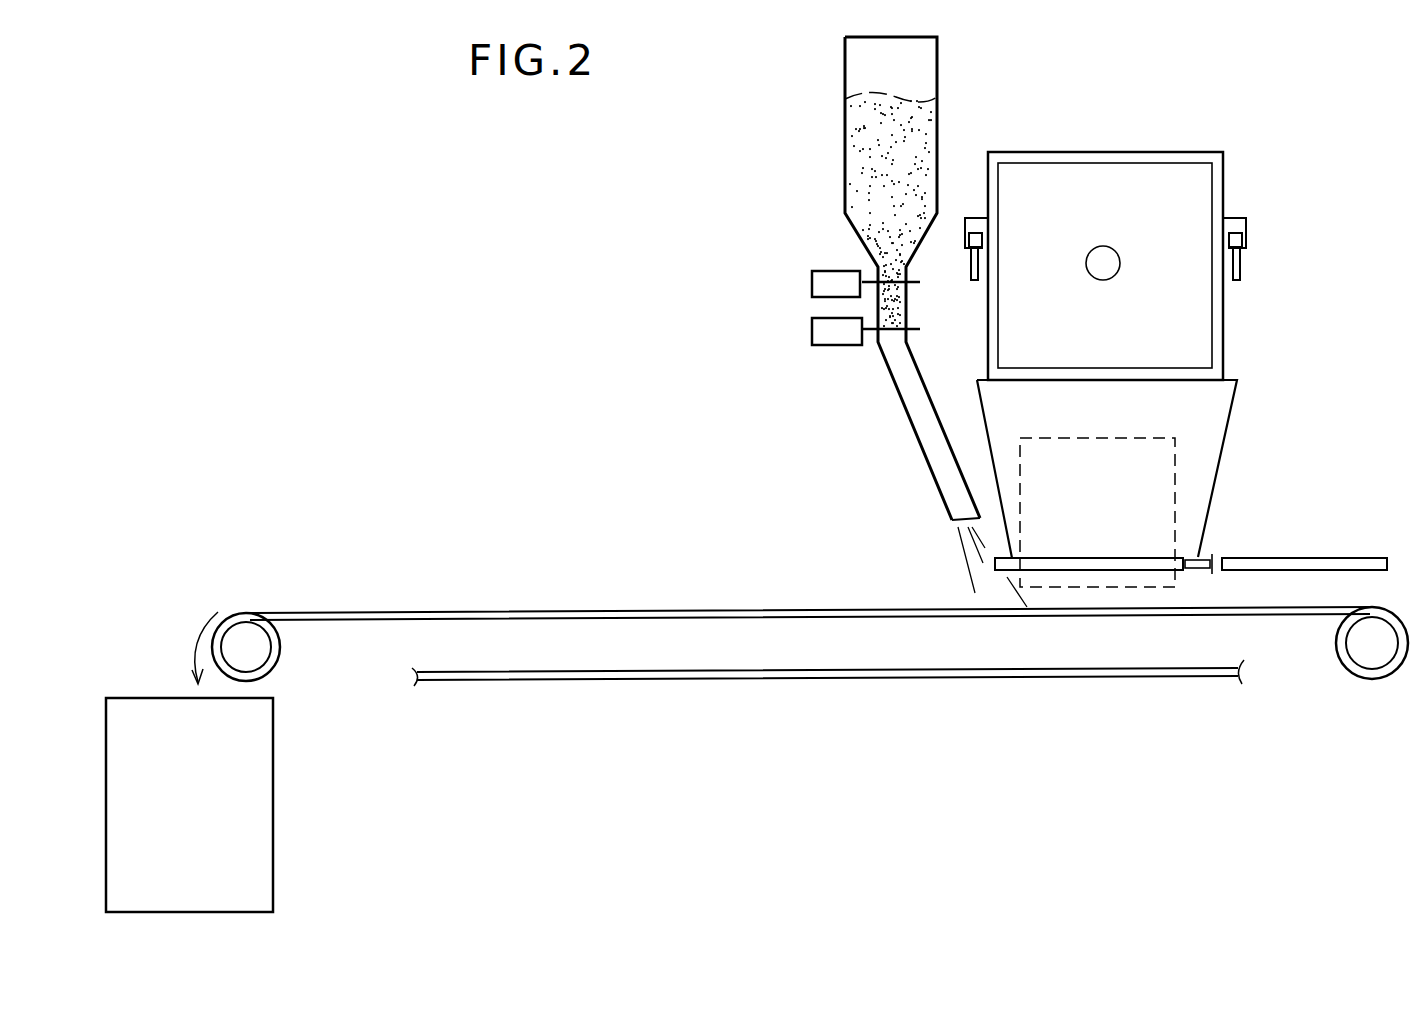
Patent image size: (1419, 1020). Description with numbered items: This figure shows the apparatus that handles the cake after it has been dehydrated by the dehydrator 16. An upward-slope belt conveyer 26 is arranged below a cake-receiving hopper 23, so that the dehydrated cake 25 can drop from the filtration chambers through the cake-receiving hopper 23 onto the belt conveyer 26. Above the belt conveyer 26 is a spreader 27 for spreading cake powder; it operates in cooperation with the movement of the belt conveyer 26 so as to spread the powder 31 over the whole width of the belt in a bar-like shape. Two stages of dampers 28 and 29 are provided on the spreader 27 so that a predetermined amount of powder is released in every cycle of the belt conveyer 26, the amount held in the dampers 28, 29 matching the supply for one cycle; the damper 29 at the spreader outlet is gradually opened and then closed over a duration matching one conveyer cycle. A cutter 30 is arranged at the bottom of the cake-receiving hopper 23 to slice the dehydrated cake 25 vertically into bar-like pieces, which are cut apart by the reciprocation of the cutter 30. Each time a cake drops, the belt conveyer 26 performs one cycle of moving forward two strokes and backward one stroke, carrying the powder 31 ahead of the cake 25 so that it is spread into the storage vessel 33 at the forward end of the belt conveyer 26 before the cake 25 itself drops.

The dehydrator 16 is at (1185, 152).
The cake-receiving hopper 23 is at (1237, 403).
The dehydrated cake 25 is at (1175, 465).
The belt conveyer 26 is at (543, 610).
The spreader 27 is at (845, 98).
The damper 28 is at (812, 284).
The damper 29 is at (812, 331).
The cutter 30 is at (1200, 560).
The powder 31 is at (862, 157).
The storage vessel 33 is at (1332, 557).